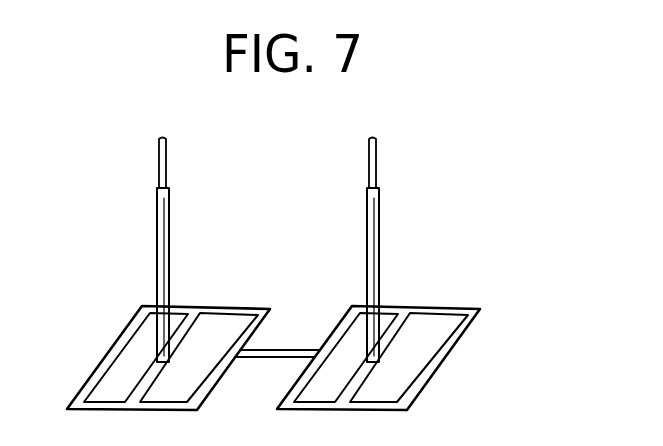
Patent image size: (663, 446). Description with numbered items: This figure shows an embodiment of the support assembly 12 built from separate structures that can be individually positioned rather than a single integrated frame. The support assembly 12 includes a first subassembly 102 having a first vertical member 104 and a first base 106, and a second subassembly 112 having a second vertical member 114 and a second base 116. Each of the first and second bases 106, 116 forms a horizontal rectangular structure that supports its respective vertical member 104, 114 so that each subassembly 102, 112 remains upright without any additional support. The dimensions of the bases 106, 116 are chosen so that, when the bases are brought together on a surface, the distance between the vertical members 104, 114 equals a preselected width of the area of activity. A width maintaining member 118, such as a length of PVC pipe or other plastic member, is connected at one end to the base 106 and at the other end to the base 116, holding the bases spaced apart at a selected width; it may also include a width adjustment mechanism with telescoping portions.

The support assembly 12 is at (441, 113).
The first subassembly 102 is at (105, 266).
The first vertical member 104 is at (169, 208).
The first base 106 is at (112, 360).
The second subassembly 112 is at (464, 274).
The second vertical member 114 is at (379, 208).
The second base 116 is at (432, 381).
The width maintaining member 118 is at (297, 349).